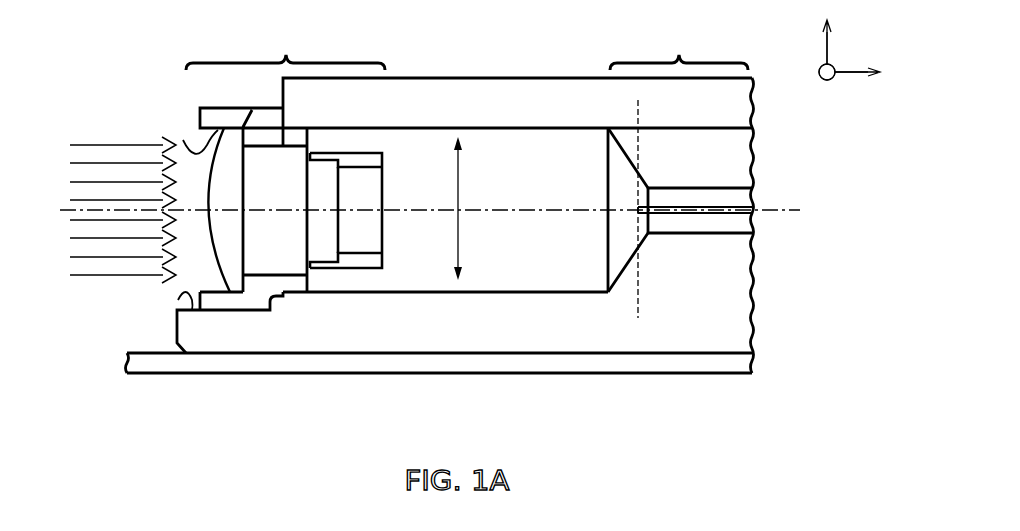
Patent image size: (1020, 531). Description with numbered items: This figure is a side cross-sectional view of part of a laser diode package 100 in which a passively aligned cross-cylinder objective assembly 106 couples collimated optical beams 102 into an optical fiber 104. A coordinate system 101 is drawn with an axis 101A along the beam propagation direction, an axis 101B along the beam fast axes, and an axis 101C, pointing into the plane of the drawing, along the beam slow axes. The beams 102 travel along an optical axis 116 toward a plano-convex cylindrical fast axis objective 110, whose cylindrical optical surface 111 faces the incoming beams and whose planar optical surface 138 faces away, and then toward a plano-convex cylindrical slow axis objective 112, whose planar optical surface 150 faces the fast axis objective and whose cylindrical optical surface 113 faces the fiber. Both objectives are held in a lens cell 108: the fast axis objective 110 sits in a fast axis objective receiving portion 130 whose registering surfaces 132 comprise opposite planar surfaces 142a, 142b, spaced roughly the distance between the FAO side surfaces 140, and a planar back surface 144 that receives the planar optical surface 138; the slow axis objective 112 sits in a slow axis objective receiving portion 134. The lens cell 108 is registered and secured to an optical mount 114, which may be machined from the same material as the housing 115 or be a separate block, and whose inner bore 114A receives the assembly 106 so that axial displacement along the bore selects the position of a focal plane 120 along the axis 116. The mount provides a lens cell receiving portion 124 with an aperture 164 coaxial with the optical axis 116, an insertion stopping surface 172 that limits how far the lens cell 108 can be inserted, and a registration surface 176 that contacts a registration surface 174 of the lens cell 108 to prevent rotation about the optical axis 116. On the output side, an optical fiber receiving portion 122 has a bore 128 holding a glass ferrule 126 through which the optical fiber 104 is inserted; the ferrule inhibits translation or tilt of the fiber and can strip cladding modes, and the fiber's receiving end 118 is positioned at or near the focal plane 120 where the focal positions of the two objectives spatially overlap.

The laser diode package 100 is at (745, 415).
The coordinate system 101 is at (870, 100).
The axis along beam propagation direction 101A is at (842, 67).
The axis along beam fast axes 101B is at (823, 50).
The axis along beam slow axes 101C is at (822, 80).
The optical beams 102 is at (83, 190).
The optical fiber 104 is at (723, 205).
The cross-cylinder objective assembly 106 is at (235, 83).
The lens cell 108 is at (252, 108).
The plano-convex cylindrical fast axis objective 110 is at (230, 252).
The cylindrical optical surface 111 is at (430, 227).
The plano-convex cylindrical slow axis objective 112 is at (314, 280).
The cylindrical optical surface 113 is at (338, 232).
The optical mount 114 is at (459, 77).
The inner bore 114A is at (488, 146).
The housing 115 is at (497, 373).
The optical axis 116 is at (488, 208).
The optical fiber receiving end 118 is at (628, 180).
The focal plane 120 is at (640, 312).
The optical fiber receiving portion 122 is at (679, 45).
The lens cell receiving portion 124 is at (285, 46).
The glass ferrule 126 is at (722, 222).
The bore 128 is at (705, 187).
The fast axis objective receiving portion 130 is at (196, 144).
The registering surfaces 132 is at (183, 140).
The slow axis objective receiving portion 134 is at (334, 141).
The planar optical surface 138 is at (245, 223).
The FAO side surfaces 140 is at (252, 110).
The planar surface 142a is at (218, 292).
The planar surface 142b is at (186, 135).
The planar back surface 144 is at (217, 162).
The planar optical surface 150 is at (296, 296).
The aperture 164 is at (457, 195).
The insertion stopping surface 172 is at (280, 118).
The registration surface 174 is at (223, 292).
The registration surface 176 is at (178, 312).